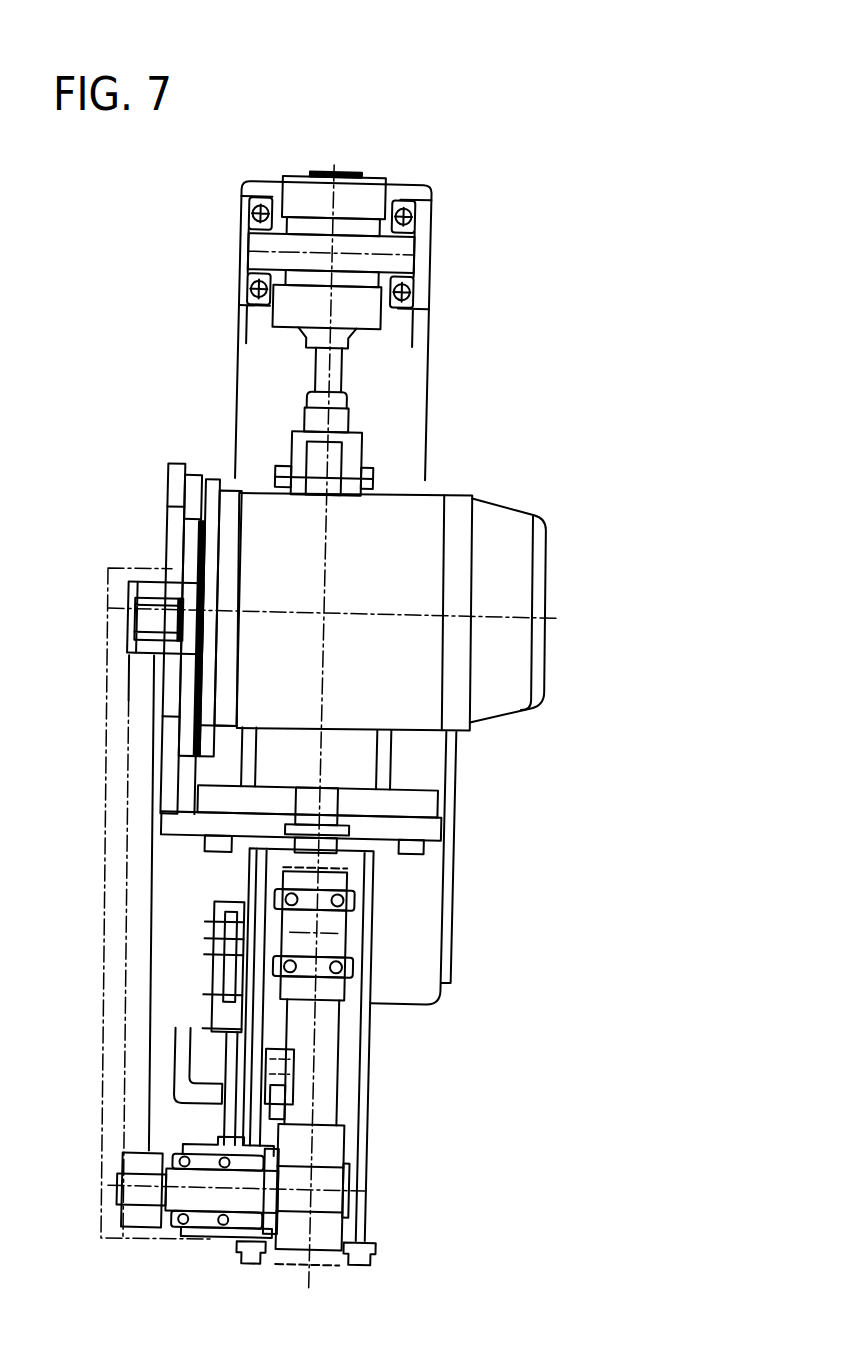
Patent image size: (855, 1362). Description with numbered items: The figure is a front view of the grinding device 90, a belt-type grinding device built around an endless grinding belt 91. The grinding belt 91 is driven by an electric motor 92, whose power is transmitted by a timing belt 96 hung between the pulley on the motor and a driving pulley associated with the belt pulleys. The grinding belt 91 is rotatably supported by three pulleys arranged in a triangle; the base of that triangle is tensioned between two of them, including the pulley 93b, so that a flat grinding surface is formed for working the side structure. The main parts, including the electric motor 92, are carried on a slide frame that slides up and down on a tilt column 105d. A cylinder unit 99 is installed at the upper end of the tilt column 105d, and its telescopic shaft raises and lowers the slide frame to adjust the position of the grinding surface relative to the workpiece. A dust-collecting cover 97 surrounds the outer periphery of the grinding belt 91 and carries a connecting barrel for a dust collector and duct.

The grinding device 90 is at (526, 368).
The cylinder unit 99 is at (363, 193).
The tilt column 105d is at (427, 257).
The electric motor 92 is at (507, 543).
The timing belt 96 is at (130, 828).
The grinding belt 91 is at (338, 1068).
The dust-collecting cover 97 is at (368, 1162).
The pulley 93b is at (330, 1240).